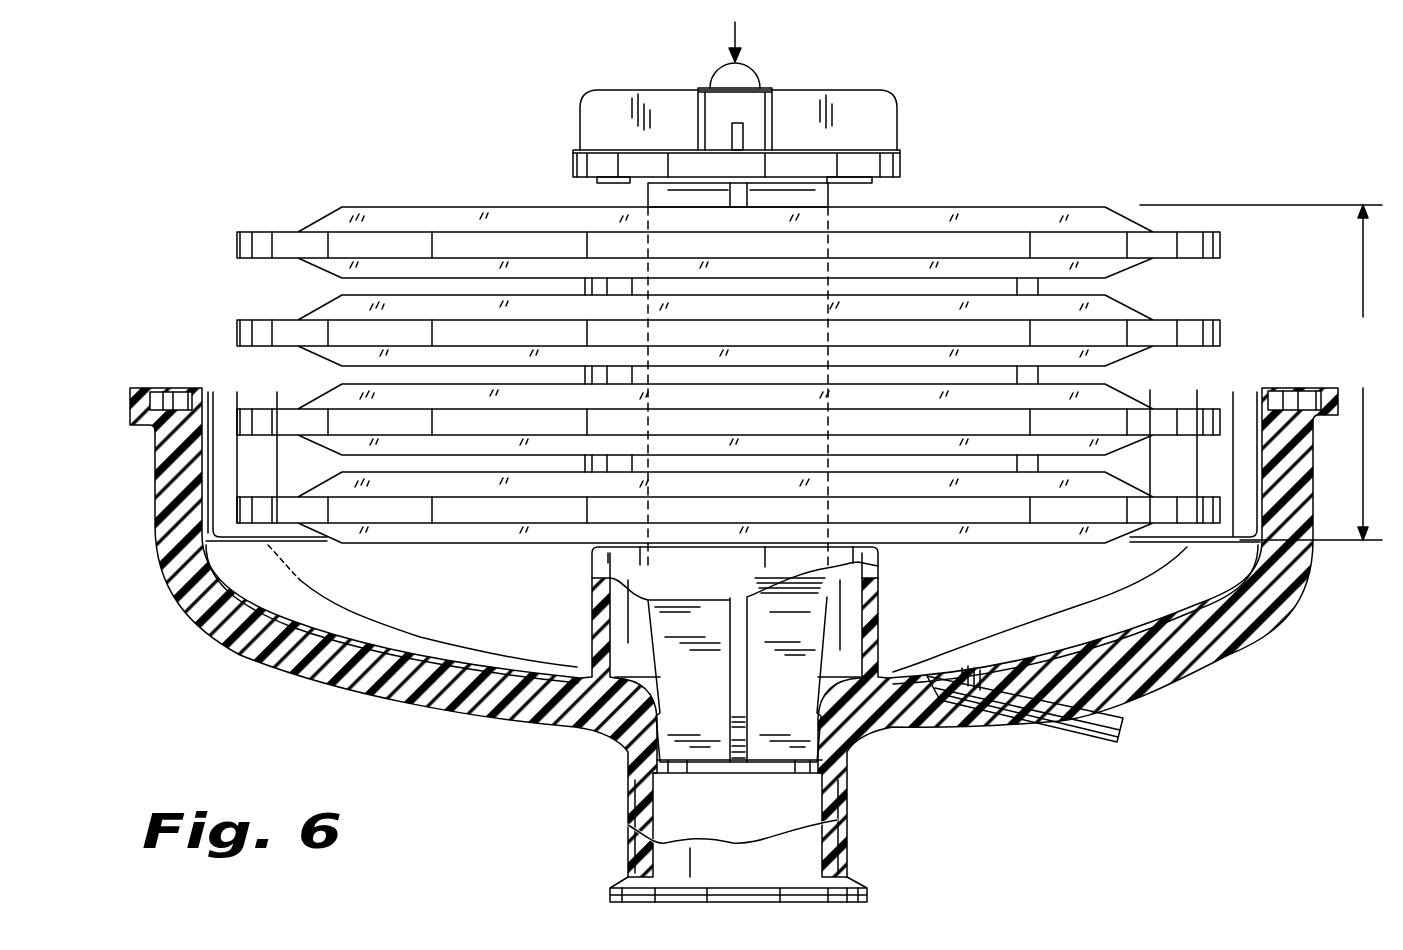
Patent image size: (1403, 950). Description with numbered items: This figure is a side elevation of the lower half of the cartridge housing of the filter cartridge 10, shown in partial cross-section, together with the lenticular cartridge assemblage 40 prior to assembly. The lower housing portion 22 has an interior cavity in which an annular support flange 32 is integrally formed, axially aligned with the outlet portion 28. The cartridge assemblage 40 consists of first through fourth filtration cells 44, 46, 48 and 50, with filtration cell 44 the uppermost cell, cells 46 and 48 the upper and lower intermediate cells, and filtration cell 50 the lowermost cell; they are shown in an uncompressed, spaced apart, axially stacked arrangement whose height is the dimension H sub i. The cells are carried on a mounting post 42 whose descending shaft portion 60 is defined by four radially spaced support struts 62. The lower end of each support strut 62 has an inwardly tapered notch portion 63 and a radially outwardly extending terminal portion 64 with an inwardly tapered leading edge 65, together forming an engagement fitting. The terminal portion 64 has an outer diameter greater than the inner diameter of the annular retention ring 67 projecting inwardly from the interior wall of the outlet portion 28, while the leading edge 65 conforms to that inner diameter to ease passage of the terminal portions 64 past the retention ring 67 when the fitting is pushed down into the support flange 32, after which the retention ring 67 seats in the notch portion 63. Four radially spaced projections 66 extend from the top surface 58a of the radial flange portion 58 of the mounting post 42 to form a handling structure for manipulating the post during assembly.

The filter cartridge 10 is at (216, 164).
The lower housing portion 22 is at (1240, 650).
The outlet portion 28 is at (850, 845).
The annular support flange 32 is at (588, 615).
The lenticular cartridge assemblage 40 is at (1040, 172).
The mounting post 42 is at (717, 107).
The first filtration cell 44 is at (338, 222).
The second filtration cell 46 is at (365, 310).
The third filtration cell 48 is at (408, 400).
The fourth filtration cell 50 is at (460, 485).
The radial flange portion 58 is at (900, 162).
The top surface 58a is at (857, 143).
The shaft portion 60 is at (830, 193).
The support strut 62 is at (868, 588).
The inwardly tapered notch portion 63 is at (685, 720).
The terminal portion 64 is at (640, 750).
The inwardly tapered leading edge 65 is at (823, 750).
The projections 66 is at (813, 88).
The annular retention ring 67 is at (708, 768).